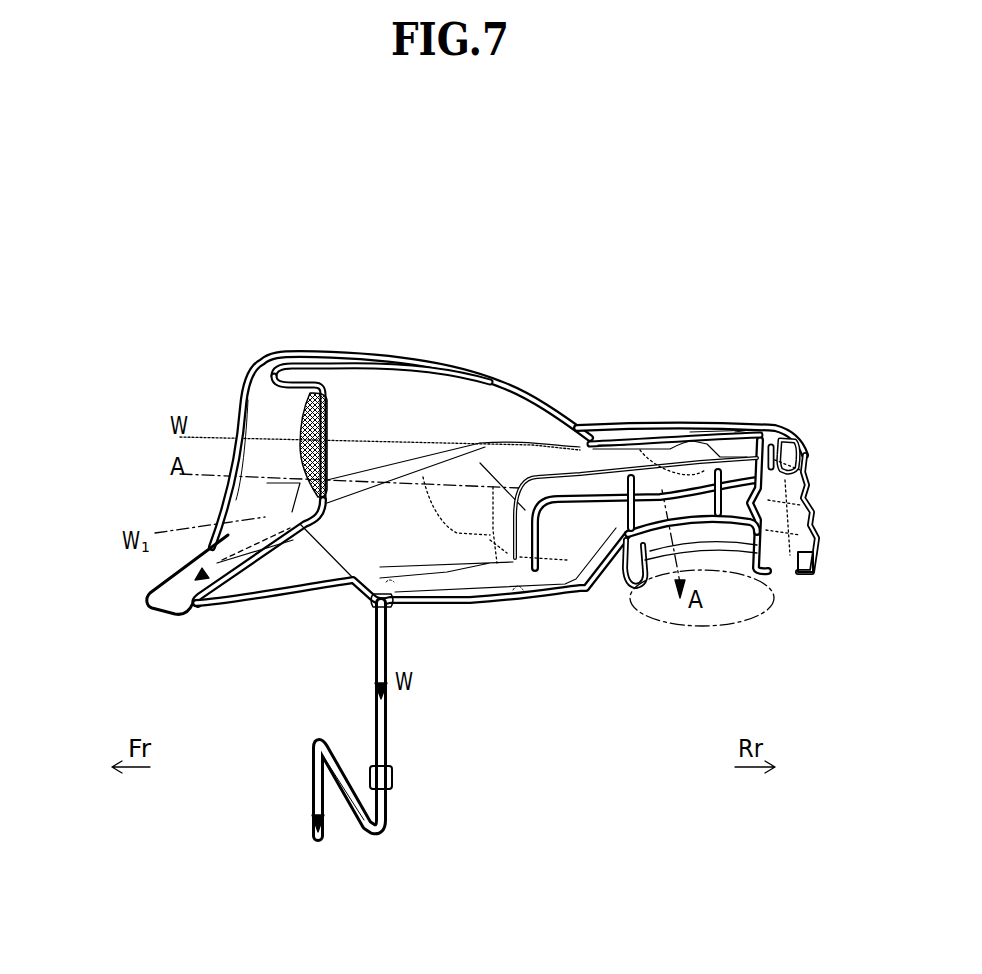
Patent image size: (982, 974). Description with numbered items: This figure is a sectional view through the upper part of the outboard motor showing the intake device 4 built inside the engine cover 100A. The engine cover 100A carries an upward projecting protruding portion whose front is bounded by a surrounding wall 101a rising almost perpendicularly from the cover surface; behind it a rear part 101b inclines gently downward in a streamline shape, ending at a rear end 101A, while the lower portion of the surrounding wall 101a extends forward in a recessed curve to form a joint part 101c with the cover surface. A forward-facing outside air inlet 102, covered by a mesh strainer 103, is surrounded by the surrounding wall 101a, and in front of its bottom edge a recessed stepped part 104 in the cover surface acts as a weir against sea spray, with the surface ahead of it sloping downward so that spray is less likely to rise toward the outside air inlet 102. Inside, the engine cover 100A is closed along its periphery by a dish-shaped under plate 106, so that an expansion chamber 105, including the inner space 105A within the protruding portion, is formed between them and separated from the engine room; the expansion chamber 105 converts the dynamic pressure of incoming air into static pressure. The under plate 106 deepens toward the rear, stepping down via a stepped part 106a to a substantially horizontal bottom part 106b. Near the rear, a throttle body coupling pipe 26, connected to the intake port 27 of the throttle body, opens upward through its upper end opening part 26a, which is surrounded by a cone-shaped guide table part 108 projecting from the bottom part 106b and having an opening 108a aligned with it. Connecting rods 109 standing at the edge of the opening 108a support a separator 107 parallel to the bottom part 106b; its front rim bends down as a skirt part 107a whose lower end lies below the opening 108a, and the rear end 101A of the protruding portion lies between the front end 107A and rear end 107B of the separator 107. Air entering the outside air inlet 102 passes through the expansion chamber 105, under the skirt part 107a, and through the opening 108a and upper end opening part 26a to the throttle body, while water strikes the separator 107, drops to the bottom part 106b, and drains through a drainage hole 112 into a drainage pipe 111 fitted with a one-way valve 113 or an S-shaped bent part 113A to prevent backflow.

The intake device 4 is at (180, 665).
The throttle body coupling pipe 26 is at (790, 565).
The upper end opening part 26a is at (645, 555).
The intake port 27 is at (755, 625).
The engine cover 100A is at (710, 472).
The surrounding wall 101a is at (238, 404).
The rear end 101A is at (598, 440).
The rear part 101b is at (408, 362).
The joint part 101c is at (200, 554).
The outside air inlet 102 is at (257, 367).
The strainer 103 is at (303, 400).
The stepped part 104 is at (265, 495).
The expansion chamber 105 is at (470, 500).
The inner space 105A is at (478, 408).
The under plate 106 is at (242, 604).
The stepped part 106a is at (394, 602).
The bottom part 106b is at (520, 595).
The separator 107 is at (658, 495).
The skirt part 107a is at (516, 588).
The front end 107A is at (470, 500).
The rear end 107B is at (770, 436).
The guide table part 108 is at (601, 597).
The opening 108a is at (690, 453).
The connecting rod 109 is at (619, 497).
The drainage pipe 111 is at (393, 745).
The drainage hole 112 is at (373, 607).
The one-way valve 113 is at (393, 778).
The bent part 113A is at (318, 803).